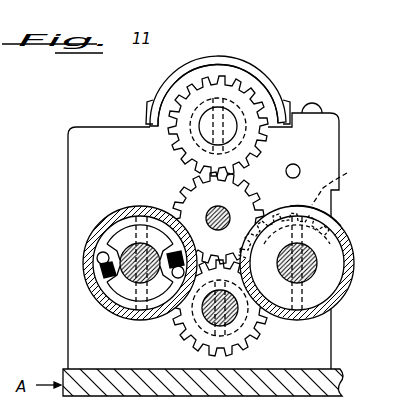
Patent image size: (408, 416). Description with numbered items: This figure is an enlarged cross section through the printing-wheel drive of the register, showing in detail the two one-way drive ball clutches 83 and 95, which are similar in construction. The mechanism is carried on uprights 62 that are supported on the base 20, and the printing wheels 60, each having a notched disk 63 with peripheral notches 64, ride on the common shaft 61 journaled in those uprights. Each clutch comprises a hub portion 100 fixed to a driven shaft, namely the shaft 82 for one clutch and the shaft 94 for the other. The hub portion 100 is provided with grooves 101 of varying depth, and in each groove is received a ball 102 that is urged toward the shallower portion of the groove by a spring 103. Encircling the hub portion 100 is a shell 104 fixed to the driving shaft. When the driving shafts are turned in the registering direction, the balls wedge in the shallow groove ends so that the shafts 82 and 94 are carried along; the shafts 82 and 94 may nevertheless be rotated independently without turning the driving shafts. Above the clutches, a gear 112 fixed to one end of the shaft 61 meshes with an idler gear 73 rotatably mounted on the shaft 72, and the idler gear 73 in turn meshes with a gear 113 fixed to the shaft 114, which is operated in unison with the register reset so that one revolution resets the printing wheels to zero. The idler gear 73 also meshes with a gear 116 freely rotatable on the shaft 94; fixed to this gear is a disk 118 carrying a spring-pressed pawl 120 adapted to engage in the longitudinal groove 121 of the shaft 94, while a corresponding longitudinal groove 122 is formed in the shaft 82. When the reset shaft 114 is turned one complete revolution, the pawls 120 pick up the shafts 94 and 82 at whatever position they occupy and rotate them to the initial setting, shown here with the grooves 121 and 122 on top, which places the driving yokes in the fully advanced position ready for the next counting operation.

The base 20 is at (63, 370).
The printing number wheel 60 is at (173, 78).
The common shaft 61 is at (226, 109).
The upright 62 is at (80, 127).
The notched disk 63 is at (170, 100).
The peripheral notch 64 is at (150, 107).
The shaft 72 is at (206, 209).
The idler gear 73 is at (187, 182).
The shaft 82 is at (120, 276).
The one-way drive ball clutch 83 is at (88, 274).
The shaft 94 is at (318, 321).
The one-way drive ball clutch 95 is at (340, 226).
The hub portion 100 is at (115, 290).
The groove 101 is at (97, 243).
The ball 102 is at (97, 258).
The spring 103 is at (103, 286).
The shell 104 is at (115, 225).
The gear 112 is at (200, 84).
The gear 113 is at (203, 350).
The shaft 114 is at (203, 322).
The gear 116 is at (344, 183).
The disk 118 is at (298, 205).
The spring-pressed pawl 120 is at (299, 203).
The longitudinal groove 121 is at (293, 283).
The longitudinal groove 122 is at (127, 243).